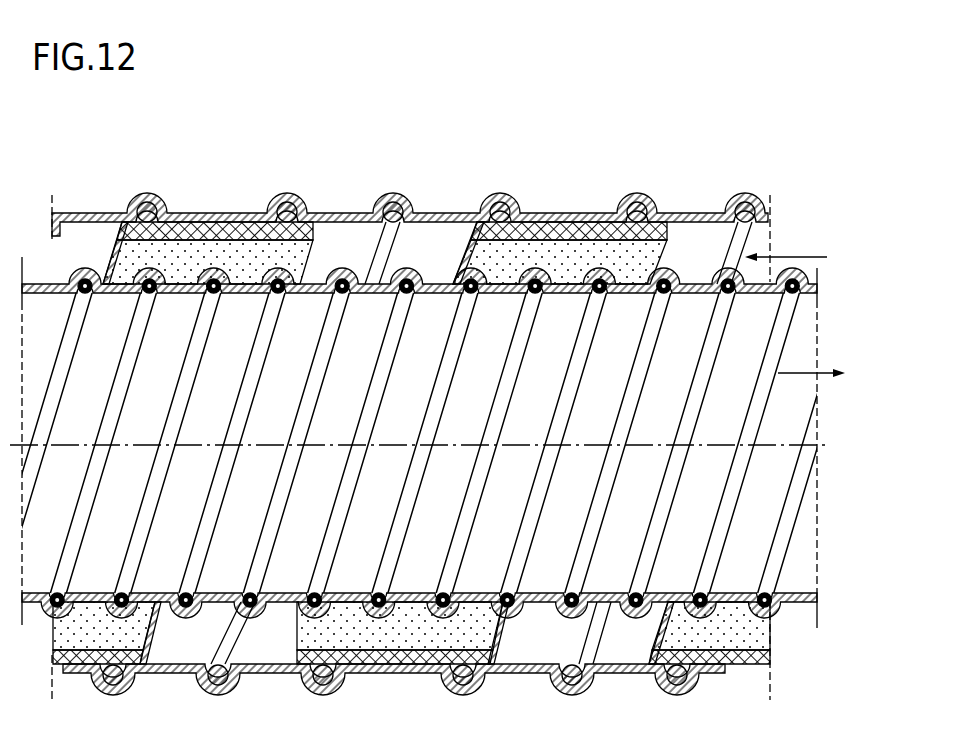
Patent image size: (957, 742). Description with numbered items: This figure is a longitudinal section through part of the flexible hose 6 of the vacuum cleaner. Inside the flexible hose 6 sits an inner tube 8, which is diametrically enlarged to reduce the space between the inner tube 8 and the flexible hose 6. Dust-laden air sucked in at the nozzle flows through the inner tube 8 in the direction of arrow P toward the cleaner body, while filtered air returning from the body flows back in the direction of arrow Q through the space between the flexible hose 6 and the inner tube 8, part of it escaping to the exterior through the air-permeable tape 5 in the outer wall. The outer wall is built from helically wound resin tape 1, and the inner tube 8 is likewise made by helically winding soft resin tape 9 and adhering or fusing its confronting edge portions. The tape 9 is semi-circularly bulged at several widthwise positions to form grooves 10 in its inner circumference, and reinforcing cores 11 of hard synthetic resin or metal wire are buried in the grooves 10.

The resin tape 1 is at (353, 213).
The air-permeable tape 5 is at (219, 222).
The flexible hose 6 is at (432, 410).
The inner tube 8 is at (786, 614).
The soft resin tape 9 is at (88, 593).
The grooves 10 is at (253, 590).
The reinforcing cores 11 is at (247, 593).